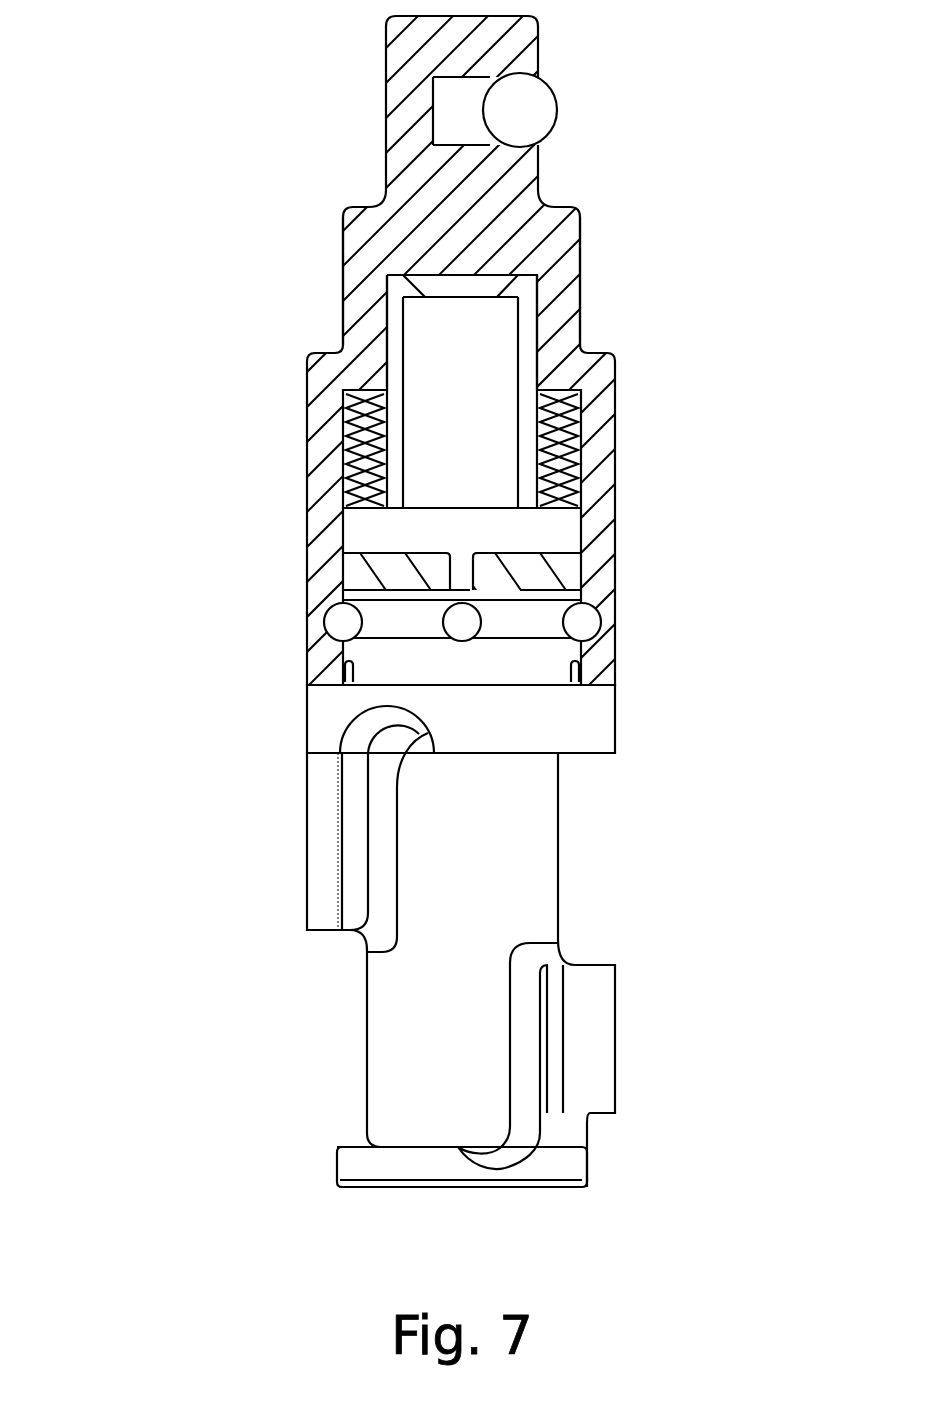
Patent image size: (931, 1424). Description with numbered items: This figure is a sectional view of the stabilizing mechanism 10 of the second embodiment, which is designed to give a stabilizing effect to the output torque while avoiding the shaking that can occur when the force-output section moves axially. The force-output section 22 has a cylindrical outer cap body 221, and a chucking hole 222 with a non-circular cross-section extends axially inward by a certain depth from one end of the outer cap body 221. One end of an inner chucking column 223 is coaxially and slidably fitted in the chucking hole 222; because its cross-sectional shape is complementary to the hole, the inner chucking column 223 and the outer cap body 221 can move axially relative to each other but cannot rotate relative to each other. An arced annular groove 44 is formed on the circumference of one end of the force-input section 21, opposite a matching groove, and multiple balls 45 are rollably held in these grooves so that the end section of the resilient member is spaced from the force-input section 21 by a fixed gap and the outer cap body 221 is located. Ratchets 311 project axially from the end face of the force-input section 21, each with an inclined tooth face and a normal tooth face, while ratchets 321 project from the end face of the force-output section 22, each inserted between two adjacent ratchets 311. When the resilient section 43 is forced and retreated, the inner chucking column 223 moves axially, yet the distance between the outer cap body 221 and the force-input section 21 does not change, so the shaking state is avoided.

The stabilizing mechanism 10 is at (184, 1122).
The force-output section 22 is at (330, 125).
The outer cap body 221 is at (515, 193).
The chucking hole 222 is at (547, 342).
The inner chucking column 223 is at (493, 457).
The resilient section 43 is at (347, 423).
The ratchets of the second engaging section 321 is at (430, 572).
The balls 45 is at (583, 621).
The annular groove 44 is at (602, 625).
The force-input section 21 is at (532, 885).
The ratchets of the first engaging section 311 is at (450, 722).